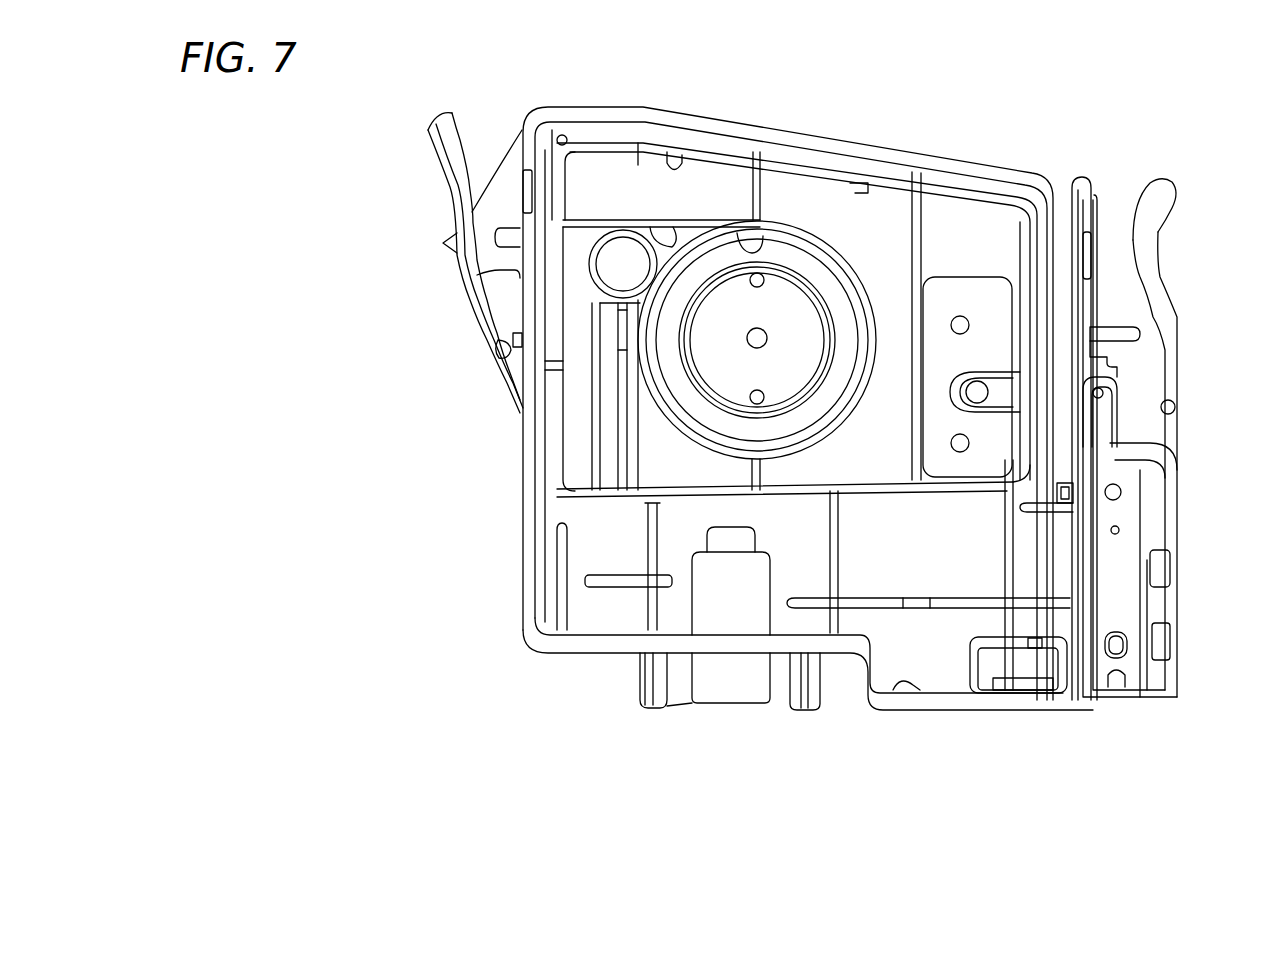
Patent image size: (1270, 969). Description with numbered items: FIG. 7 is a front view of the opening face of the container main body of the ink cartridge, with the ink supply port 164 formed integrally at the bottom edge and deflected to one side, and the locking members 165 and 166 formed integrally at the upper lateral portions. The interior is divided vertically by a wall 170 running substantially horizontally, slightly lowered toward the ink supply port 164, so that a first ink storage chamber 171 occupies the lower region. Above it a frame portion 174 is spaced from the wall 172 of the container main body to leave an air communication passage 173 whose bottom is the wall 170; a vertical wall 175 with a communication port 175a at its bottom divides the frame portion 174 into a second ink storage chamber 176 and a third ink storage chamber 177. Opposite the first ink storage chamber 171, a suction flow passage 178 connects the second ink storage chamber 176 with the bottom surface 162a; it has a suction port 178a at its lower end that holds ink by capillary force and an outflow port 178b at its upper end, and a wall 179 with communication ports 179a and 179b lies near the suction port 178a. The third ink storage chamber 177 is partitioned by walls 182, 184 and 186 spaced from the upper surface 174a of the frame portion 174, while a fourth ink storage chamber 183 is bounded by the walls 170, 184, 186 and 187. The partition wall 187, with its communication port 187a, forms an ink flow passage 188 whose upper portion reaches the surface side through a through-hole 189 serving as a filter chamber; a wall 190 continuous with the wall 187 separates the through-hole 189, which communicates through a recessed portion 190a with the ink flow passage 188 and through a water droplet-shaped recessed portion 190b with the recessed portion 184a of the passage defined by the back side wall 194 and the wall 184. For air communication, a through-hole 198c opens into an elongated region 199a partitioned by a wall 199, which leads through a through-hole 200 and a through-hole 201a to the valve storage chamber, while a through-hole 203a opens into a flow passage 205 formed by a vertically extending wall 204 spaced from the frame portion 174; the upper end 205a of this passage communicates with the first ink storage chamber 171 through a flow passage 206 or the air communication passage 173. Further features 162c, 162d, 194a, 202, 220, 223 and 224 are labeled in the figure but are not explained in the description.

The bottom surface 162a is at (913, 697).
The engaging portion 162c is at (1160, 570).
The engaging portion 162d is at (1160, 660).
The ink supply port 164 is at (697, 705).
The locking member 165 is at (445, 127).
The locking member 166 is at (1165, 180).
The wall 170 is at (887, 483).
The first ink storage chamber 171 is at (793, 557).
The wall 172 is at (992, 166).
The air communication passage 173 is at (710, 150).
The frame portion 174 is at (863, 213).
The upper surface 174a is at (670, 158).
The vertical wall 175 is at (1042, 247).
The communication port 175a is at (1100, 433).
The second ink storage chamber 176 is at (1140, 222).
The third ink storage chamber 177 is at (893, 292).
The suction flow passage 178 is at (1122, 640).
The suction port 178a is at (1052, 687).
The outflow port 178b is at (1122, 493).
The wall 179 is at (993, 642).
The communication port 179a is at (975, 680).
The communication port 179b is at (1040, 642).
The wall 182 is at (583, 220).
The fourth ink storage chamber 183 is at (713, 360).
The wall 184 is at (915, 270).
The recessed portion 184a is at (757, 255).
The partition wall 186 is at (750, 470).
The partition wall 187 is at (593, 443).
The communication port 187a is at (572, 543).
The ink flow passage 188 is at (575, 420).
The through-hole 189 is at (545, 358).
The wall 190 is at (760, 125).
The recessed portion 190a is at (612, 270).
The water droplet-shaped recessed portion 190b is at (773, 232).
The back side wall 194 is at (690, 365).
The shaft hole 194a is at (755, 398).
The through-hole 198c is at (980, 373).
The wall 199 is at (1000, 370).
The elongated region 199a is at (1095, 335).
The through-hole 200 is at (1018, 393).
The through-hole 201a is at (1120, 368).
The hole 202 is at (1176, 410).
The through-hole 203a is at (1157, 550).
The vertically extending wall 204 is at (1060, 206).
The flow passage 205 is at (1062, 285).
The upper end 205a is at (1075, 192).
The flow passage 206 is at (1158, 195).
The lever 220 is at (1020, 467).
The protrusion 223 is at (1130, 647).
The pin 224 is at (1123, 537).